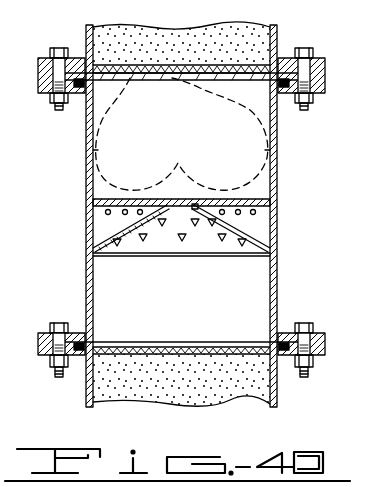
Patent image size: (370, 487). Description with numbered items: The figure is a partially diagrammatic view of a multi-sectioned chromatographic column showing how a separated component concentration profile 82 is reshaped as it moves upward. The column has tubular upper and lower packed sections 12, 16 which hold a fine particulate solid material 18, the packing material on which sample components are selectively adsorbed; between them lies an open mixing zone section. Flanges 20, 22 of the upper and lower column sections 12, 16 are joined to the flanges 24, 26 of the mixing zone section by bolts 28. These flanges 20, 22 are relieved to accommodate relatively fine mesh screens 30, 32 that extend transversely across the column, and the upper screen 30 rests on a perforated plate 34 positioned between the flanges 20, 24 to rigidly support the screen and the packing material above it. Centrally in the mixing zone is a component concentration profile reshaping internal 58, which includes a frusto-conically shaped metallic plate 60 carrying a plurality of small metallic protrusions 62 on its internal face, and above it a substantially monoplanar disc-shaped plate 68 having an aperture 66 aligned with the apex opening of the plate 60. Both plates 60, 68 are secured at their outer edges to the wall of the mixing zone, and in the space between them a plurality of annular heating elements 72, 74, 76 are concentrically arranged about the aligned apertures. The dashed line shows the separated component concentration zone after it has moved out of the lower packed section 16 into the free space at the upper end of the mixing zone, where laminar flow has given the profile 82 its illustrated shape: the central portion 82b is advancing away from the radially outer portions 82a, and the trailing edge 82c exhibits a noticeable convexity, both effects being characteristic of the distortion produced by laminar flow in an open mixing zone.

The upper column section 12 is at (278, 35).
The lower column section 16 is at (88, 385).
The particulate solid material 18 is at (192, 53).
The flange 20 is at (38, 62).
The flange 22 is at (38, 350).
The flange 24 is at (38, 88).
The flange 26 is at (38, 340).
The bolts 28 is at (60, 48).
The upper screen 30 is at (113, 70).
The lower screen 32 is at (128, 346).
The perforated plate 34 is at (106, 80).
The component concentration profile reshaping internal 58 is at (277, 185).
The frusto-conically shaped metallic plate 60 is at (95, 253).
The metallic protrusions 62 is at (143, 242).
The aperture 66 is at (175, 199).
The disc-shaped plate 68 is at (100, 210).
The annular heating element 72 is at (218, 216).
The annular heating element 74 is at (238, 216).
The annular heating element 76 is at (255, 215).
The component concentration profile 82 is at (93, 193).
The radially outer portions 82a is at (88, 151).
The central portion 82b is at (190, 92).
The trailing edge 82c is at (180, 163).